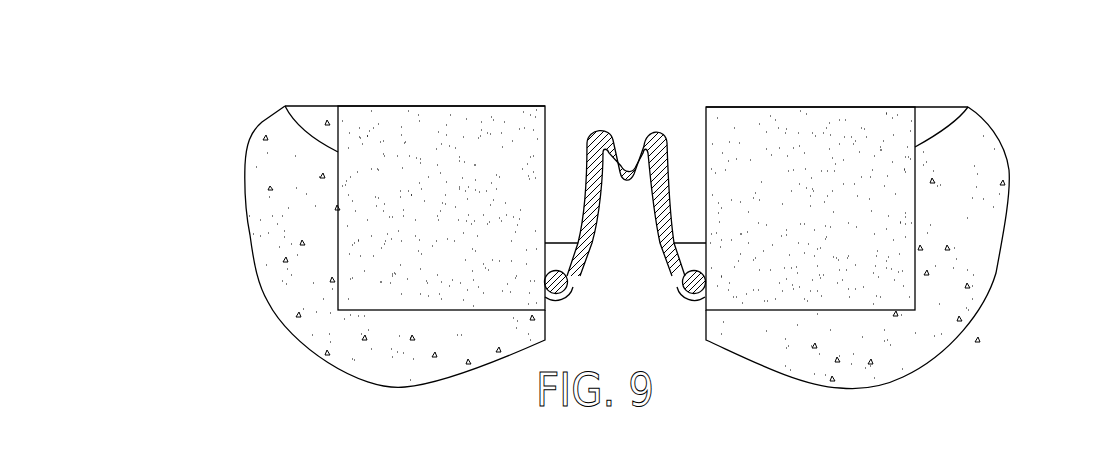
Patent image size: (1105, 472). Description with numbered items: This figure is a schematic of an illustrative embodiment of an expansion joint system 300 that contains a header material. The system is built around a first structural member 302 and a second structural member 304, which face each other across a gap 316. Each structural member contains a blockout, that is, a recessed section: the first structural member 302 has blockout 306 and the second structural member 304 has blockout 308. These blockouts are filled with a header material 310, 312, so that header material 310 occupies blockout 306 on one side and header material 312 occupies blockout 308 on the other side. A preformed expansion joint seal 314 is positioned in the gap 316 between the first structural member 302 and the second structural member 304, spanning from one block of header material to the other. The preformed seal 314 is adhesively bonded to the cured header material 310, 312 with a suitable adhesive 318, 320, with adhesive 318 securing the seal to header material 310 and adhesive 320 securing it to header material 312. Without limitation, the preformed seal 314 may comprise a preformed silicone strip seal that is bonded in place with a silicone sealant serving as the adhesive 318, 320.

The expansion joint system 300 is at (563, 52).
The first structural member 302 is at (257, 260).
The second structural member 304 is at (996, 273).
The blockout 306 is at (285, 106).
The blockout 308 is at (968, 107).
The header material 310 is at (440, 130).
The header material 312 is at (795, 130).
The preformed expansion joint seal 314 is at (600, 212).
The gap 316 is at (631, 98).
The adhesive 318 is at (566, 298).
The adhesive 320 is at (680, 288).